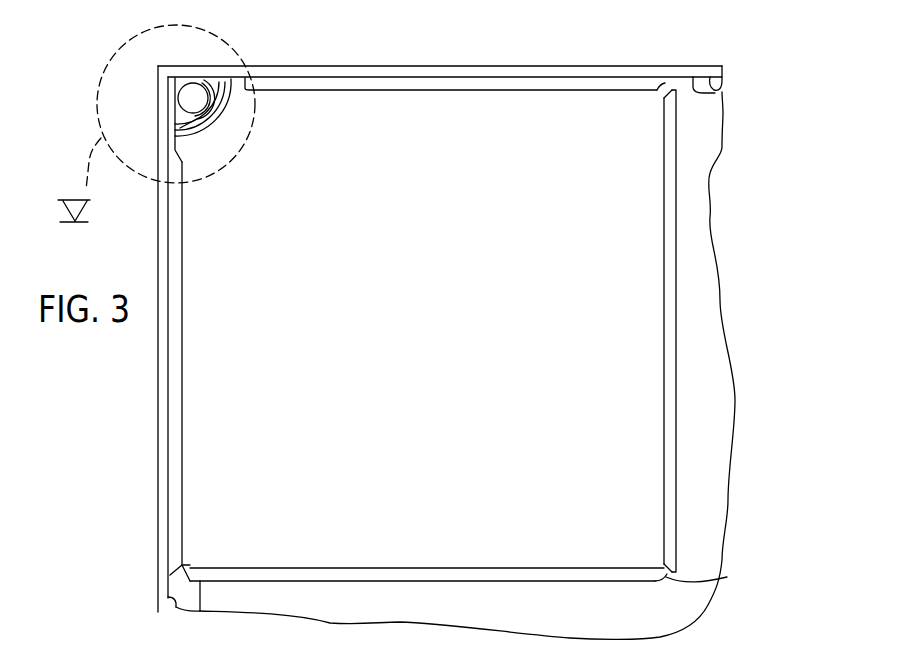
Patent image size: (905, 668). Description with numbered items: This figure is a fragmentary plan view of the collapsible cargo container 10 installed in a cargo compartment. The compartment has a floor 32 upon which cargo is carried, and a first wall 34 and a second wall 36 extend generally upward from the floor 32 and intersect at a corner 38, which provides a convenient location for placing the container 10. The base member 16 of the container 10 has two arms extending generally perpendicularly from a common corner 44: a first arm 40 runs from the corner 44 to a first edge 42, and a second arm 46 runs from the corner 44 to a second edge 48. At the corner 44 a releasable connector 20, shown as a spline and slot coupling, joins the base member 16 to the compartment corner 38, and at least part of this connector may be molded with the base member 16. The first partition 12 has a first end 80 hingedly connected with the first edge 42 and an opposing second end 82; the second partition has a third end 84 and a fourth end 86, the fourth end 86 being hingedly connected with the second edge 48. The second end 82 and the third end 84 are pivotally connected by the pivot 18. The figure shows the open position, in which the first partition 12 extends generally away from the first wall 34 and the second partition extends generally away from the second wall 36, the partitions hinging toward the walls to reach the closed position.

The collapsible cargo container 10 is at (579, 86).
The first partition 12 is at (466, 569).
The base member 16 is at (398, 88).
The pivot 18 is at (712, 578).
The releasable connector 20 is at (212, 74).
The floor 32 is at (697, 183).
The first wall 34 is at (178, 615).
The second wall 36 is at (715, 93).
The corner 38 is at (148, 62).
The first arm 40 is at (184, 343).
The first edge 42 is at (184, 562).
The corner 44 is at (228, 138).
The second arm 46 is at (478, 91).
The second edge 48 is at (660, 91).
The first end 80 is at (202, 611).
The second end 82 is at (646, 583).
The third end 84 is at (664, 553).
The fourth end 86 is at (668, 114).